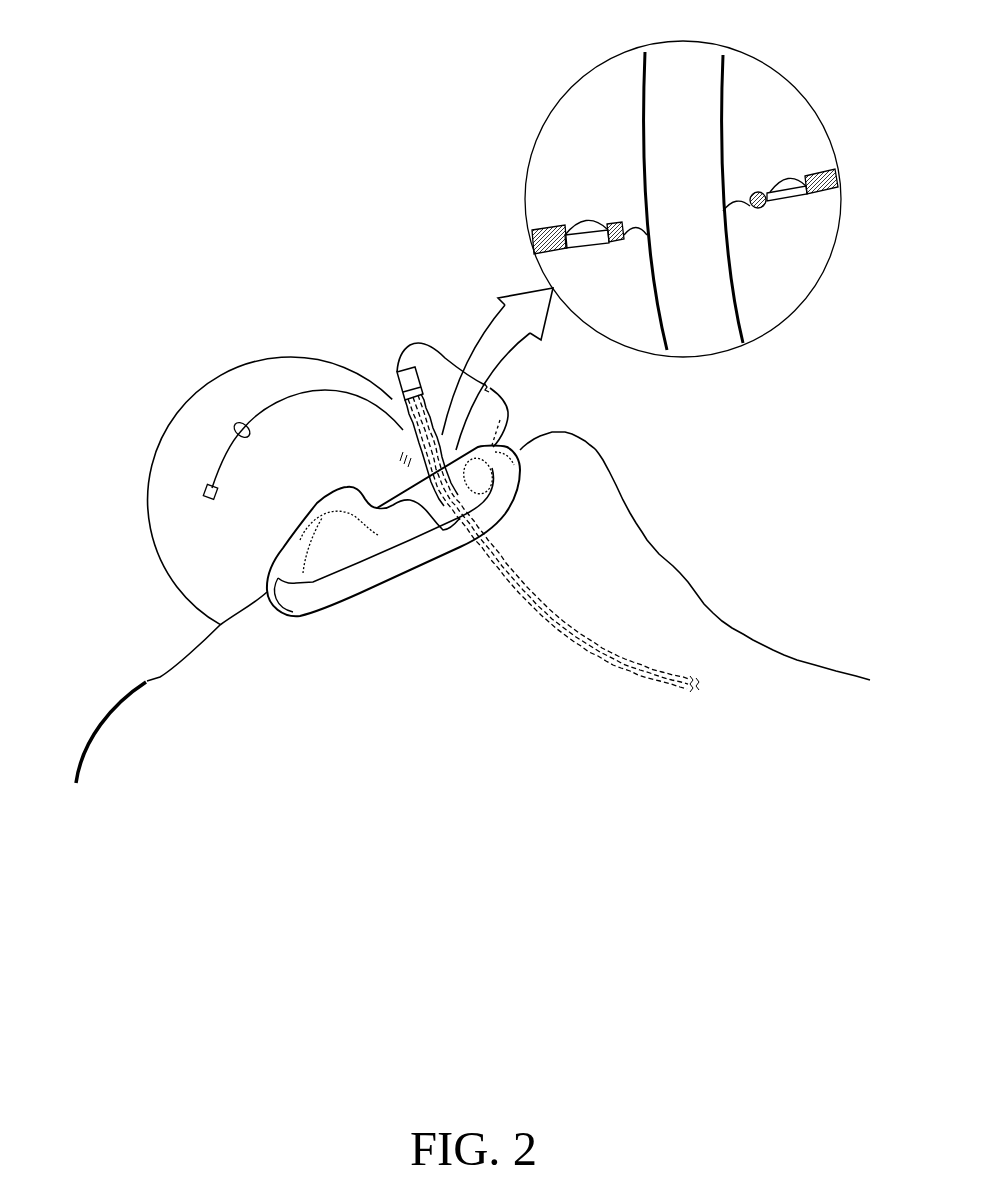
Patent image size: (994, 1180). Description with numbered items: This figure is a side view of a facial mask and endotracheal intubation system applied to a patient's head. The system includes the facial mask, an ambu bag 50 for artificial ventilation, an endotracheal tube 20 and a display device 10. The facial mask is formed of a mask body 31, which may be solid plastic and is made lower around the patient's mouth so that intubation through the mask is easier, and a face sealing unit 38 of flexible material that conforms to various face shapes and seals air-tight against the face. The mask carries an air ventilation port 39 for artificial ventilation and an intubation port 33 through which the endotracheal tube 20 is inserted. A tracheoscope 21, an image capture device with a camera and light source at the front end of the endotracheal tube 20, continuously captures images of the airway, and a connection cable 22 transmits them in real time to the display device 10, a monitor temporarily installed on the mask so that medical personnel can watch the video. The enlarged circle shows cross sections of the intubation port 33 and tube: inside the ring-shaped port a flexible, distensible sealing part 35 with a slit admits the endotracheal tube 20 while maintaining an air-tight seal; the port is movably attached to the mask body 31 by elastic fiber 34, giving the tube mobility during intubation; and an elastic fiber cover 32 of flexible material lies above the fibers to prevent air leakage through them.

The display device 10 is at (458, 502).
The endotracheal tube 20 is at (525, 583).
The tracheoscope 21 is at (615, 655).
The connection cable 22 is at (420, 345).
The mask body 31 is at (280, 562).
The elastic fiber cover 32 is at (582, 225).
The intubation port 33 is at (622, 243).
The elastic fiber 34 is at (585, 243).
The sealing part 35 is at (638, 227).
The face sealing unit 38 is at (382, 573).
The air ventilation port 39 is at (313, 530).
The ambu bag 50 is at (228, 415).